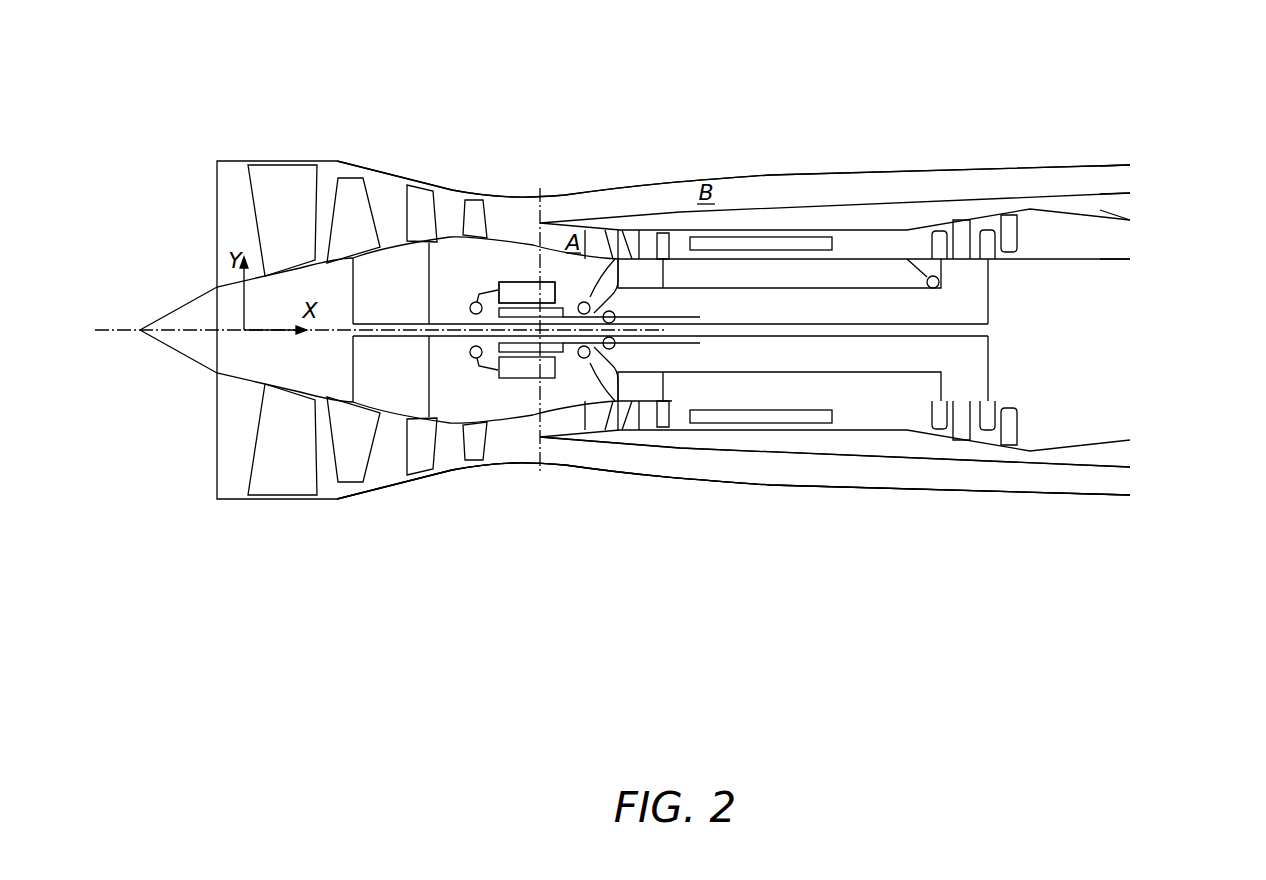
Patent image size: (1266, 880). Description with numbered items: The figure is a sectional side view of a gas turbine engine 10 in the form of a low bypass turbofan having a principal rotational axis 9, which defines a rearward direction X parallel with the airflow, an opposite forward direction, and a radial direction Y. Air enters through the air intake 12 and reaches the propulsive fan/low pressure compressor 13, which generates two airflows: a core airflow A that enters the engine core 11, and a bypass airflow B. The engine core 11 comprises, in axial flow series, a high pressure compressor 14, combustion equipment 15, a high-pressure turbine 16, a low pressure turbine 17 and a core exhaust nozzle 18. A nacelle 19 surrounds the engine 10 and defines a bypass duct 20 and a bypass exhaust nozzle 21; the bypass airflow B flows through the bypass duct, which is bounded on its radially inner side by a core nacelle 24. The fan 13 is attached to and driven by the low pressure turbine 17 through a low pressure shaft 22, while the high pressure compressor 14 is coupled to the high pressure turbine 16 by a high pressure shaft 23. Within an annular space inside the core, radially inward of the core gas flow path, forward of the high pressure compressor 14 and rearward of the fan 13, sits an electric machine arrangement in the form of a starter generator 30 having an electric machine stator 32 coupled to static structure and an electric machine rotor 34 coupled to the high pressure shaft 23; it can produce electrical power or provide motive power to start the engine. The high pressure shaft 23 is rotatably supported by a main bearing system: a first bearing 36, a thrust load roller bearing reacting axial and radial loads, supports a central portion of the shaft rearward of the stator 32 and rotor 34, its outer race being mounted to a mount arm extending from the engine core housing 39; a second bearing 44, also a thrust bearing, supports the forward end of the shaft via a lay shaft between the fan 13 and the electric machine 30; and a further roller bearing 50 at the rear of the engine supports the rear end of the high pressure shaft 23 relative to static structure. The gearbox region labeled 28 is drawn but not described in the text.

The principal rotational axis 9 is at (190, 330).
The gas turbine engine 10 is at (705, 118).
The engine core 11 is at (652, 211).
The air intake 12 is at (217, 187).
The propulsive fan/low pressure compressor 13 is at (440, 497).
The high pressure compressor 14 is at (620, 452).
The combustion equipment 15 is at (777, 237).
The high-pressure turbine 16 is at (937, 231).
The low pressure turbine 17 is at (987, 230).
The core exhaust nozzle 18 is at (1115, 240).
The nacelle 19 is at (865, 170).
The bypass duct 20 is at (730, 463).
The bypass exhaust nozzle 21 is at (1108, 178).
The low pressure shaft 22 is at (755, 323).
The high pressure shaft 23 is at (880, 372).
The core nacelle 24 is at (953, 460).
The gearbox 28 is at (498, 358).
The starter generator 30 is at (502, 271).
The electric machine stator 32 is at (518, 282).
The electric machine rotor 34 is at (520, 353).
The first bearing 36 is at (605, 231).
The engine core housing 39 is at (557, 437).
The second bearing 44 is at (476, 302).
The further roller bearing 50 is at (939, 280).